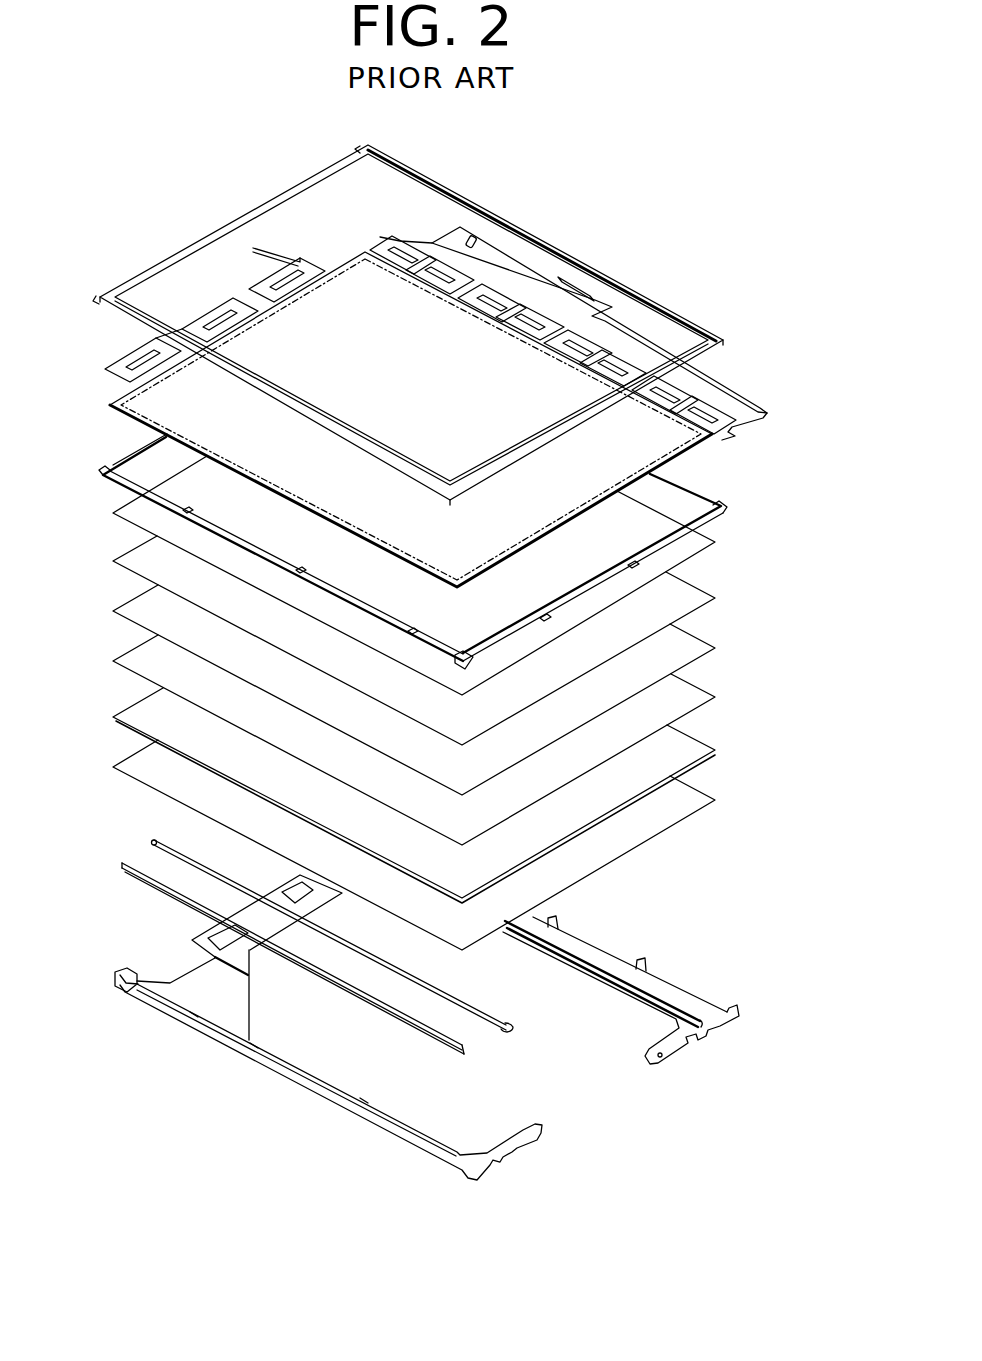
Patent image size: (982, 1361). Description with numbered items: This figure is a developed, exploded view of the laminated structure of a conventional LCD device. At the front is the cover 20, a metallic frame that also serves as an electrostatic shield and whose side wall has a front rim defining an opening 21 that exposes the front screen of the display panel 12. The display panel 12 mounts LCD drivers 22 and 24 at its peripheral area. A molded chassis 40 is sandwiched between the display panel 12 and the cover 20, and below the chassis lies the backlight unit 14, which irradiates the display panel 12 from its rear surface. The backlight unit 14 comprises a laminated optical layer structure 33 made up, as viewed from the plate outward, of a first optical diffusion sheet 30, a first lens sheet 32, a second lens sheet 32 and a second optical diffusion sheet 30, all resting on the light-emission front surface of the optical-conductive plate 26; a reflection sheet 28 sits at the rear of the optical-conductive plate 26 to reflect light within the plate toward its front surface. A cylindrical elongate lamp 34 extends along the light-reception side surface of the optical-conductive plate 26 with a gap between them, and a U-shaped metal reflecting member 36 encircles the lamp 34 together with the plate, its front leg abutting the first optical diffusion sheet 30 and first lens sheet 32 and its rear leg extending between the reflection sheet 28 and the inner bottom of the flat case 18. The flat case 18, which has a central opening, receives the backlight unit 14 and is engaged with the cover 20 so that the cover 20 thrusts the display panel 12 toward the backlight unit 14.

The display panel 12 is at (693, 455).
The backlight unit 14 is at (500, 692).
The flat case 18 is at (157, 1003).
The cover 20 is at (408, 316).
The opening 21 is at (402, 197).
The LCD driver 22 is at (733, 433).
The LCD driver 24 is at (130, 373).
The optical-conductive plate 26 is at (703, 733).
The reflection sheet 28 is at (452, 845).
The optical diffusion sheet 30 is at (707, 542).
The lens sheet 32 is at (707, 587).
The laminated optical layer structure 33 is at (478, 650).
The elongate lamp 34 is at (160, 852).
The reflecting member 36 is at (150, 885).
The molded chassis 40 is at (723, 513).